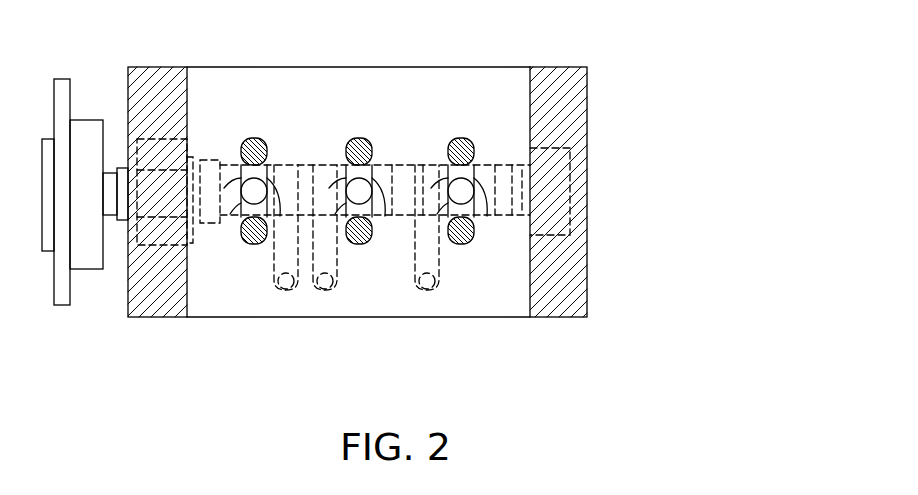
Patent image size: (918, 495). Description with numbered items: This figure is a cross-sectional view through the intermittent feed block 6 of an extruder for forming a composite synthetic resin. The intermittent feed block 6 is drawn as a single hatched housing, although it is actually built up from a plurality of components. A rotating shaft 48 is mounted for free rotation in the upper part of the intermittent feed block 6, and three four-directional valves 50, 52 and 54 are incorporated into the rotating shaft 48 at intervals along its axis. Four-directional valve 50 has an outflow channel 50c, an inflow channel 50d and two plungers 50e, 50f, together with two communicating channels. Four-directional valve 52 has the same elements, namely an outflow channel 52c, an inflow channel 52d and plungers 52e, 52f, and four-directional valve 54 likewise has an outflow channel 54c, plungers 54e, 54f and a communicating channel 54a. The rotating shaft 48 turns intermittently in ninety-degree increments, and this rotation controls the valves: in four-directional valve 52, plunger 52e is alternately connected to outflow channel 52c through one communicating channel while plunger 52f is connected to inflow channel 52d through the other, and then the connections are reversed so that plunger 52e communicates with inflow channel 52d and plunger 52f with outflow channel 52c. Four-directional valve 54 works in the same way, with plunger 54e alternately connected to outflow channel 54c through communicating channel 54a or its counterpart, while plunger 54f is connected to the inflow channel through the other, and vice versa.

The intermittent feed block 6 is at (598, 109).
The rotating shaft 48 is at (414, 164).
The four-directional valve 50 is at (219, 243).
The outflow channel 50c is at (238, 198).
The inflow channel 50d is at (277, 291).
The plunger 50e is at (245, 140).
The plunger 50f is at (247, 245).
The four-directional valve 52 is at (381, 221).
The outflow channel 52c is at (373, 182).
The inflow channel 52d is at (318, 290).
The plunger 52e is at (357, 139).
The plunger 52f is at (354, 245).
The four-directional valve 54 is at (463, 181).
The communicating channel 54a is at (447, 184).
The outflow channel 54c is at (477, 177).
The plunger 54e is at (461, 139).
The plunger 54f is at (459, 245).